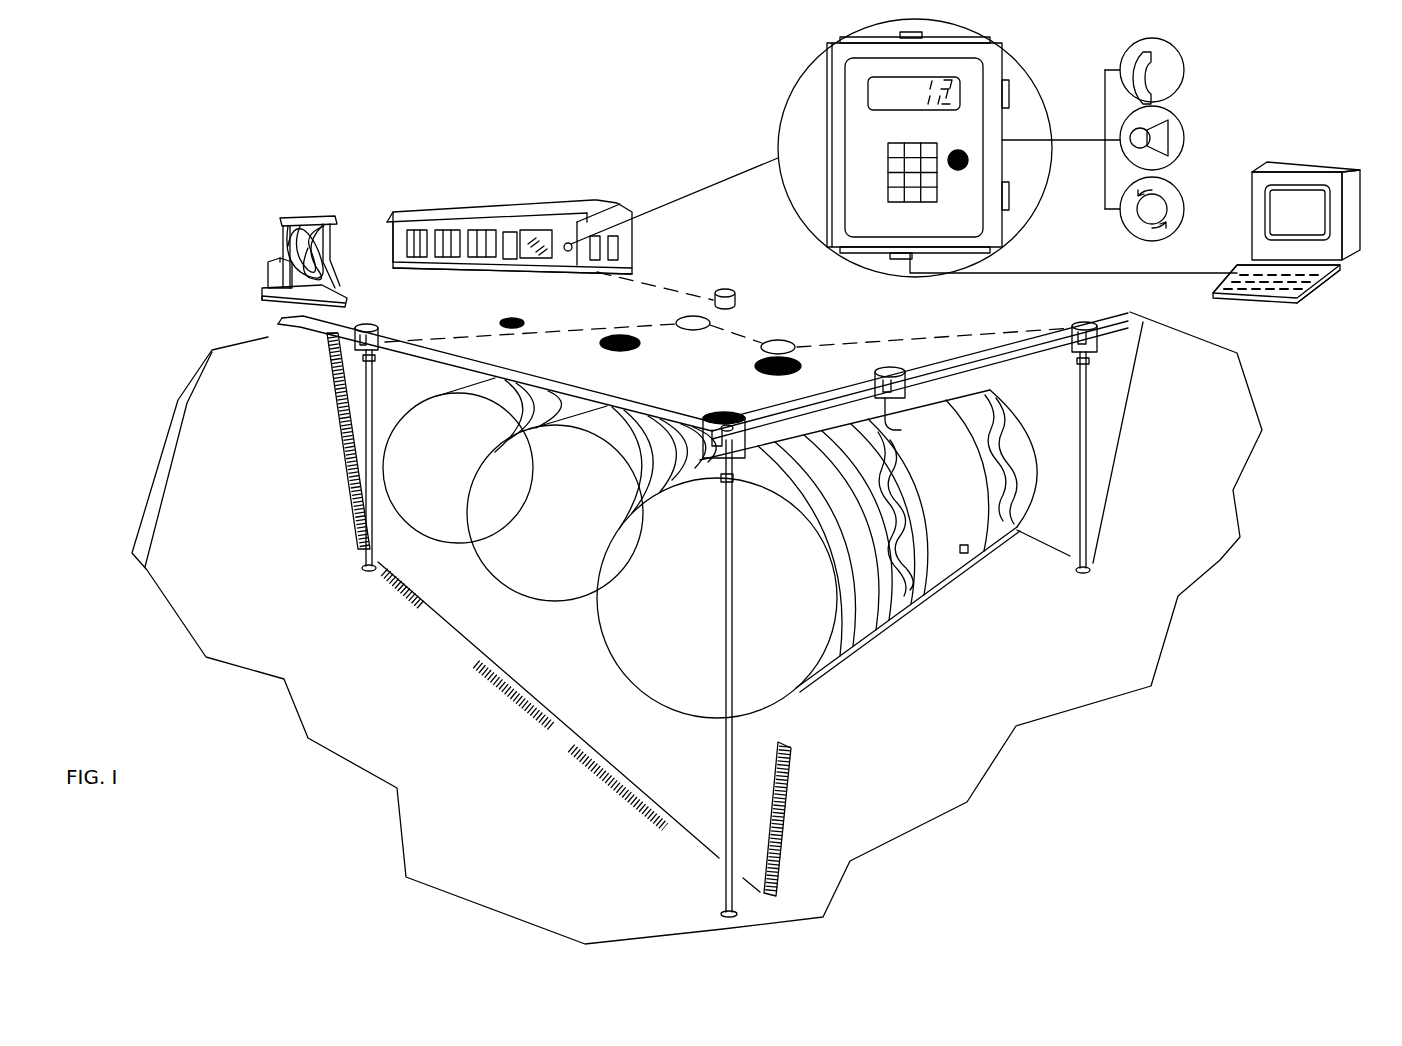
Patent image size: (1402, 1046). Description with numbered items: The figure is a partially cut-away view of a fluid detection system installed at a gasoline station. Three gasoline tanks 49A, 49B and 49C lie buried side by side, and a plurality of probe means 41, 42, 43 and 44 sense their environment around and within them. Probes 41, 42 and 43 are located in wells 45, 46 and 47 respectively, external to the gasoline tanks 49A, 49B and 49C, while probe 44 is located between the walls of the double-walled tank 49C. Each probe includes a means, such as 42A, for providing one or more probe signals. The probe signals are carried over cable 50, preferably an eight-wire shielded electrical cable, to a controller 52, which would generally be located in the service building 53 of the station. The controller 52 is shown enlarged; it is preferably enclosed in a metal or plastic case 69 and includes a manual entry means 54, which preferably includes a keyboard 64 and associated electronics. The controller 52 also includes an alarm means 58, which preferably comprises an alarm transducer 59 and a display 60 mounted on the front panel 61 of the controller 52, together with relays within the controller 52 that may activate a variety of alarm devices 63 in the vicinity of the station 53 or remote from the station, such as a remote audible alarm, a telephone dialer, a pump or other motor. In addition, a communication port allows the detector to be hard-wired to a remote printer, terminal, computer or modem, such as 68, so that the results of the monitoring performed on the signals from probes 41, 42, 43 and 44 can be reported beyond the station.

The probe means 41 is at (376, 334).
The probe means 42 is at (736, 424).
The means for providing probe signals 42A is at (717, 470).
The probe means 43 is at (1090, 322).
The probe means 44 is at (968, 552).
The well 45 is at (360, 490).
The well 46 is at (724, 758).
The well 47 is at (1088, 468).
The gasoline tank 49A is at (472, 460).
The gasoline tank 49B is at (591, 503).
The gasoline tank 49C is at (817, 554).
The cable 50 is at (639, 286).
The controller 52 is at (578, 234).
The service building 53 is at (441, 205).
The manual entry means 54 is at (871, 210).
The alarm means 58 is at (1076, 134).
The alarm transducer 59 is at (1061, 156).
The display 60 is at (868, 93).
The front panel 61 is at (986, 63).
The alarm devices 63 is at (1158, 28).
The keyboard 64 is at (900, 145).
The remote printer, terminal, computer or modem 68 is at (1294, 162).
The case 69 is at (835, 136).